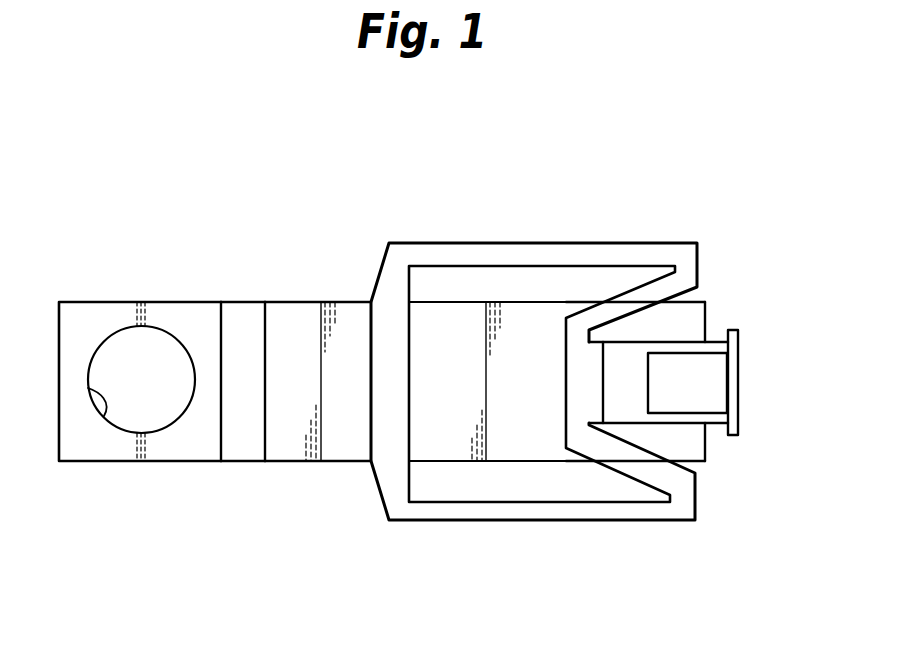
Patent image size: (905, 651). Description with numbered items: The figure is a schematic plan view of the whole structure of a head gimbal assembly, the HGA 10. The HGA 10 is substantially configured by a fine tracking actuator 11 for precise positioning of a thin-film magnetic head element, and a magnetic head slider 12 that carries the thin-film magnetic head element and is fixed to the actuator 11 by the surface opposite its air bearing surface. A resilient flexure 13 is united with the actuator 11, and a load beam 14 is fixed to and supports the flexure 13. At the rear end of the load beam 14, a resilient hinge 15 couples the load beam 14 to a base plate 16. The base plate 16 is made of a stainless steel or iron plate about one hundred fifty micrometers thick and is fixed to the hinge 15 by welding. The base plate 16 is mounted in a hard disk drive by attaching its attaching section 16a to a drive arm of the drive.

The HGA 10 is at (453, 183).
The fine tracking actuator 11 is at (715, 348).
The magnetic head slider 12 is at (703, 395).
The resilient flexure 13 is at (553, 512).
The load beam 14 is at (340, 450).
The resilient hinge 15 is at (240, 450).
The base plate 16 is at (166, 450).
The attaching section 16a is at (104, 416).